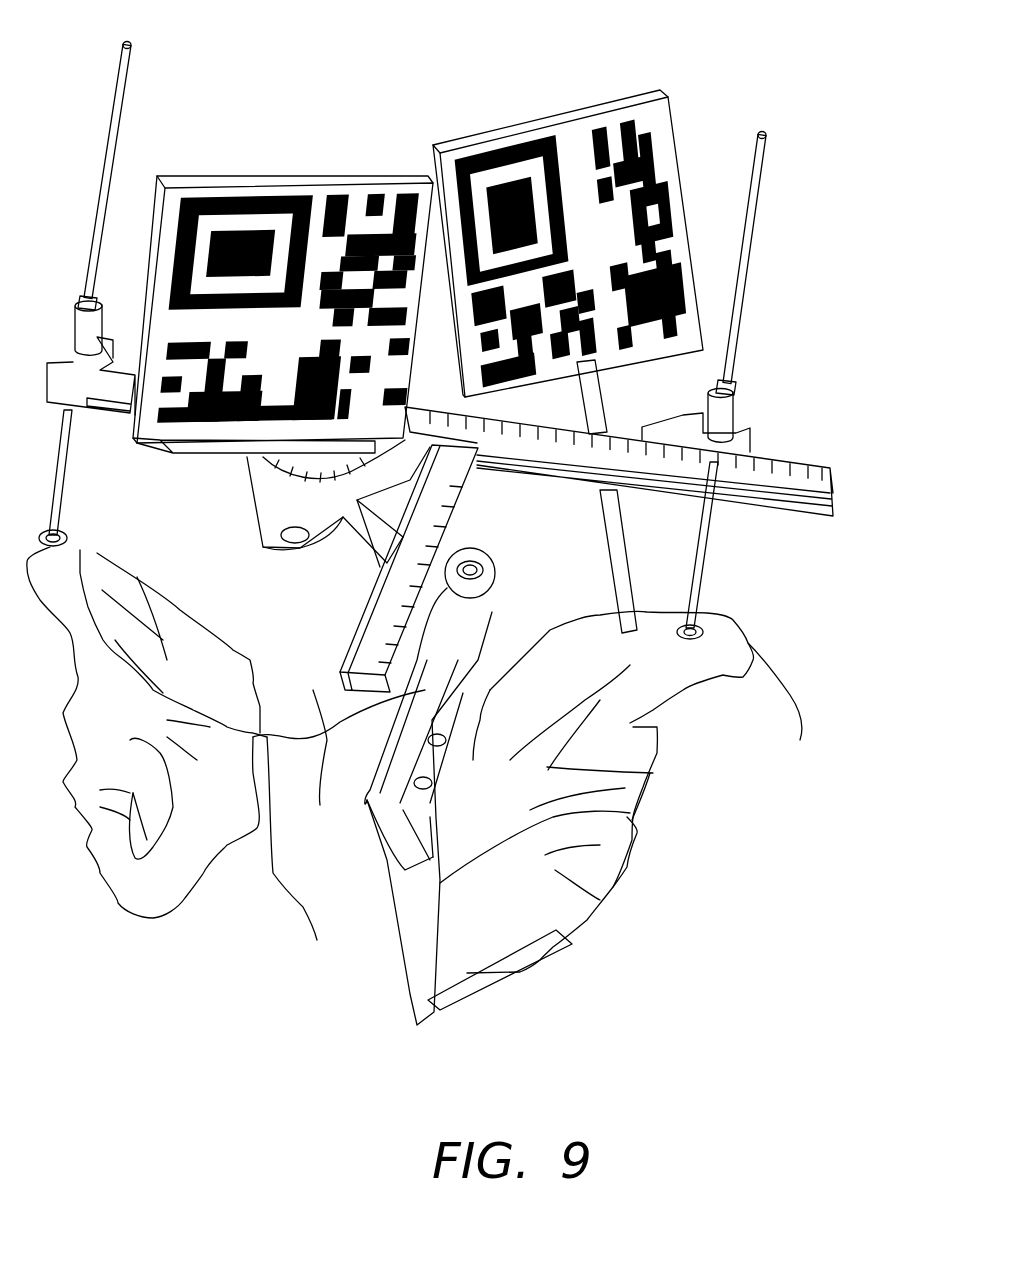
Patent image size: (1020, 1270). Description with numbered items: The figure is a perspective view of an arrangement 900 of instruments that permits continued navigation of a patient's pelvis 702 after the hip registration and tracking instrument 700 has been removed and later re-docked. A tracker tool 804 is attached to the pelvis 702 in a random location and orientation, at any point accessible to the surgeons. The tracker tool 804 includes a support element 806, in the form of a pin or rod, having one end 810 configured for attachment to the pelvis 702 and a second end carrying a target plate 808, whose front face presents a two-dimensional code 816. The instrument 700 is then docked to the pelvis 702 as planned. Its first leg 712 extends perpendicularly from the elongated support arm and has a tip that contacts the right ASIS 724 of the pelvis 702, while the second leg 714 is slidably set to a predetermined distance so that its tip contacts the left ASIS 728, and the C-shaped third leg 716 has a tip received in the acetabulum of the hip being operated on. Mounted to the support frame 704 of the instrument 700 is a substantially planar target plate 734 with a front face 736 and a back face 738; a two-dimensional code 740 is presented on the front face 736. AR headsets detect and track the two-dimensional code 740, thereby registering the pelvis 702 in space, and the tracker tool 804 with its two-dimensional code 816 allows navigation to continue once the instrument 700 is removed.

The arrangement of instruments 900 is at (308, 68).
The target plate 808 is at (502, 124).
The tracker tool 804 is at (697, 146).
The target plate 734 is at (298, 172).
The front face 736 is at (297, 265).
The back face 738 is at (148, 212).
The 2D code 740 is at (300, 344).
The 2D code 816 is at (618, 260).
The support element 806 is at (610, 393).
The first leg 712 is at (78, 462).
The right ASIS 724 is at (66, 530).
The support frame 704 is at (262, 520).
The one end 810 is at (608, 598).
The second leg 714 is at (712, 565).
The hip registration and tracking instrument 700 is at (797, 540).
The left ASIS 728 is at (770, 680).
The pelvis 702 is at (685, 800).
The third leg 716 is at (440, 1025).